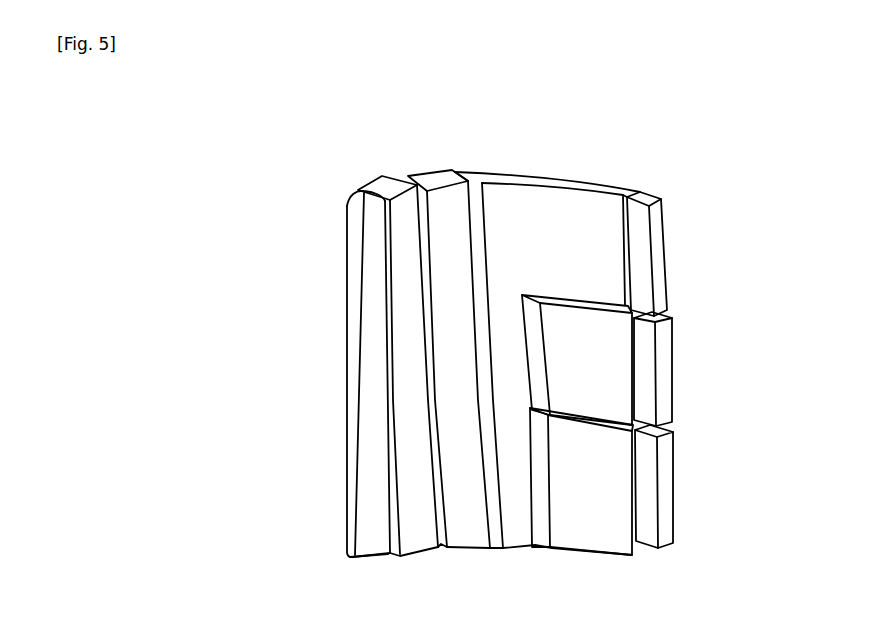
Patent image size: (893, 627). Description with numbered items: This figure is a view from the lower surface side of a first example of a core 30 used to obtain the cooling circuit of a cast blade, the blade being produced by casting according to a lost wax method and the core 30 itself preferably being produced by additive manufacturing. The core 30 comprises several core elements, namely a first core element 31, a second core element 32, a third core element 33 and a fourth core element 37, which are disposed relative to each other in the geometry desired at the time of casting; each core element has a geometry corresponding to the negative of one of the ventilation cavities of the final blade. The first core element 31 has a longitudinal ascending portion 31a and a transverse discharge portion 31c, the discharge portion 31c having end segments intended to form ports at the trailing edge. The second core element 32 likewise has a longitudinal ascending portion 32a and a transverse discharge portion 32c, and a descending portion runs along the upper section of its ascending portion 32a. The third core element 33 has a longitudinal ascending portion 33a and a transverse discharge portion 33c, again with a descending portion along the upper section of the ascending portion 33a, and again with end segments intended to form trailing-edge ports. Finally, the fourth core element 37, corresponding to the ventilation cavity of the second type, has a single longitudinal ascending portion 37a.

The core 30 is at (683, 220).
The first core element 31 is at (542, 197).
The longitudinal ascending portion 31a is at (517, 535).
The transverse discharge portion 31c is at (580, 213).
The second core element 32 is at (432, 181).
The longitudinal ascending portion 32a is at (467, 535).
The transverse discharge portion 32c is at (603, 360).
The third core element 33 is at (390, 184).
The longitudinal ascending portion 33a is at (420, 537).
The transverse discharge portion 33c is at (603, 500).
The fourth core element 37 is at (352, 193).
The longitudinal ascending portion 37a is at (373, 548).